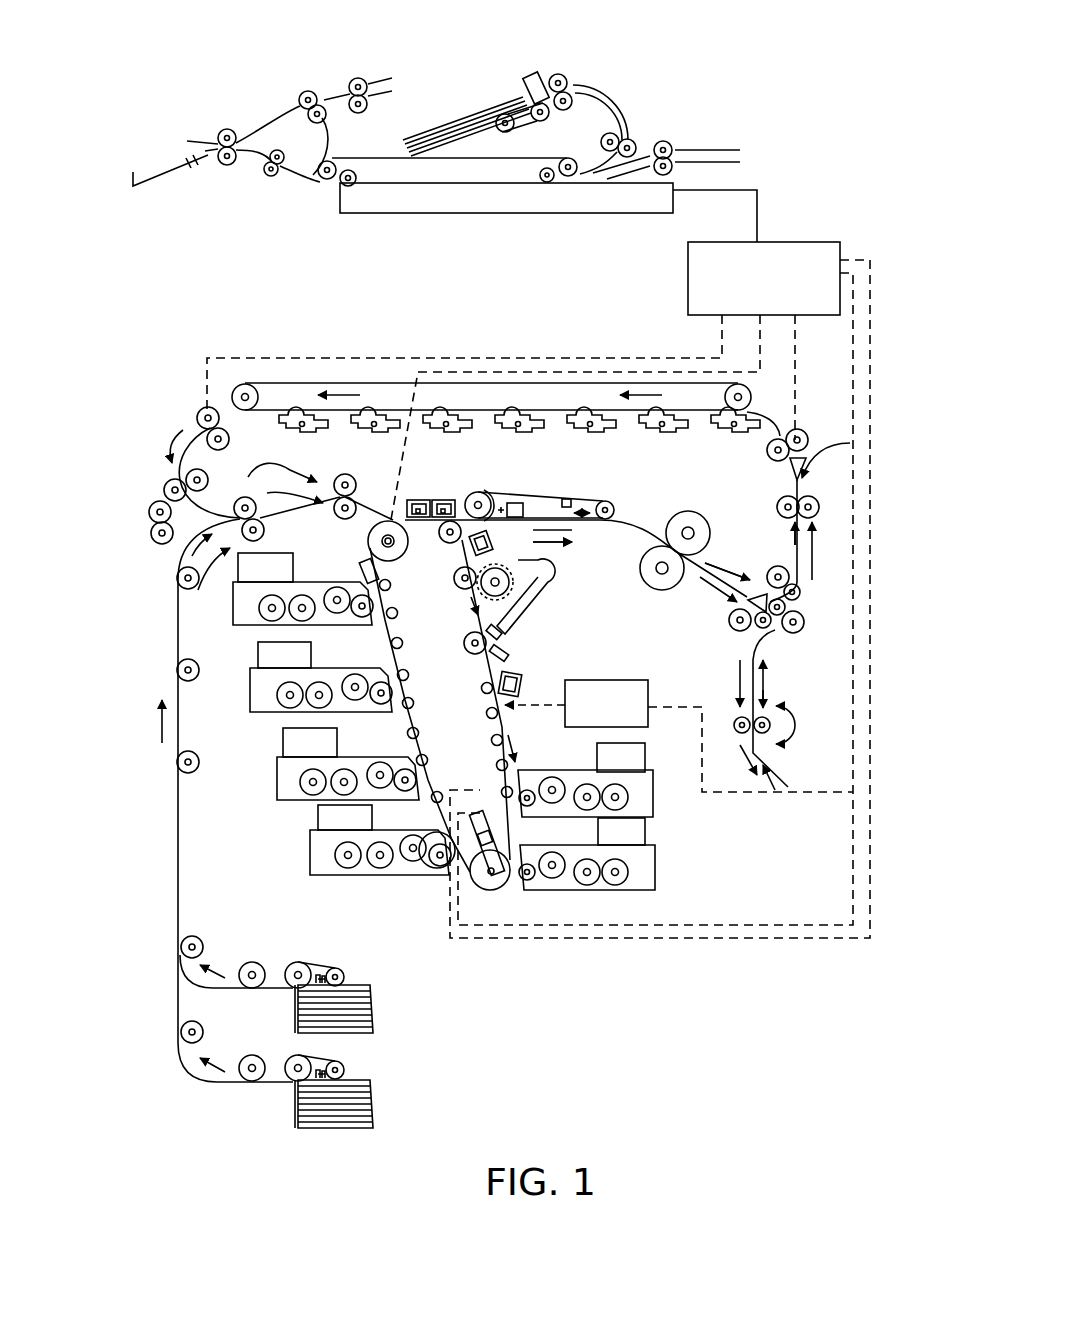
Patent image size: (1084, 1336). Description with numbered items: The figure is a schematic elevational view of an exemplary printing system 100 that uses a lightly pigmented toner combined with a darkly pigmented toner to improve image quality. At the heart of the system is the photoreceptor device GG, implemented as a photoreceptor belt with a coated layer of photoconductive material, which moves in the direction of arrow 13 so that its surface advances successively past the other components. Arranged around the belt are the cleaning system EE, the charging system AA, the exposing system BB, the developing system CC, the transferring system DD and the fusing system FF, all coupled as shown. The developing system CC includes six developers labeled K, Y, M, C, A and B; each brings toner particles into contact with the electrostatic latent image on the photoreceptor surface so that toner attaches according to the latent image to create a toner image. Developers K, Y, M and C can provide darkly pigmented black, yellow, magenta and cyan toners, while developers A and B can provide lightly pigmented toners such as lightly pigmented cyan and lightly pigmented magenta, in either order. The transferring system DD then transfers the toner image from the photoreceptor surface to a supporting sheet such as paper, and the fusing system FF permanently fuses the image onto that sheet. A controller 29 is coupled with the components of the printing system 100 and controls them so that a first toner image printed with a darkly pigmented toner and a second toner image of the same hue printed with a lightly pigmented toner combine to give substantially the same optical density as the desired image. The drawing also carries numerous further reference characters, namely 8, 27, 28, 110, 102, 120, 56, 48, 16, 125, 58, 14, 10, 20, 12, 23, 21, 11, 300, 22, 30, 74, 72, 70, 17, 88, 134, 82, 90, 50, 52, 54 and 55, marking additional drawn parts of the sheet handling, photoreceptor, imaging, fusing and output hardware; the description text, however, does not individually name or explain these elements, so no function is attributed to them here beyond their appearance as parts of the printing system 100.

The printing system 100 is at (757, 60).
The document feeder 8 is at (248, 110).
The document handler 27 is at (663, 98).
The raster input scanner 28 is at (453, 205).
The controller 29 is at (774, 288).
The sheet transport belt 110 is at (312, 385).
The feed rollers 102 is at (198, 415).
The sheet path rollers 120 is at (271, 543).
The vertical sheet path 56 is at (178, 810).
The sheet transport direction 48 is at (165, 722).
The drive roller 16 is at (370, 538).
The transfer station 125 is at (399, 463).
The transferring system DD is at (437, 488).
The transfer belt unit 58 is at (446, 497).
The tensioning roller 14 is at (446, 545).
The photoconductive belt 10 is at (503, 718).
The stripping roller 20 is at (487, 880).
The backing roller 12 is at (428, 833).
The belt guide rollers 23 is at (393, 609).
The idler rollers 21 is at (443, 602).
The direction of arrow 13 is at (470, 598).
The photoconductive surface 11 is at (413, 713).
The cleaning brush unit 300 is at (530, 640).
The cleaning system EE is at (528, 577).
The charging system AA is at (530, 668).
The corona generating device 22 is at (520, 682).
The raster output scanner 30 is at (648, 732).
The exposing system BB is at (604, 678).
The fuser roller 74 is at (690, 528).
The pressure roller 72 is at (660, 592).
The fuser assembly 70 is at (628, 576).
The fusing system FF is at (658, 516).
The sheet inverter 17 is at (820, 447).
The output rollers 88 is at (786, 468).
The decurler rollers 134 is at (735, 611).
The duplex path 82 is at (733, 640).
The developer unit 90 is at (377, 633).
The developing system CC is at (245, 638).
The photoreceptor device GG is at (402, 745).
The sheet feeder 50 is at (275, 962).
The feed rollers 52 is at (294, 988).
The paper tray 54 is at (372, 985).
The paper tray 55 is at (372, 1080).